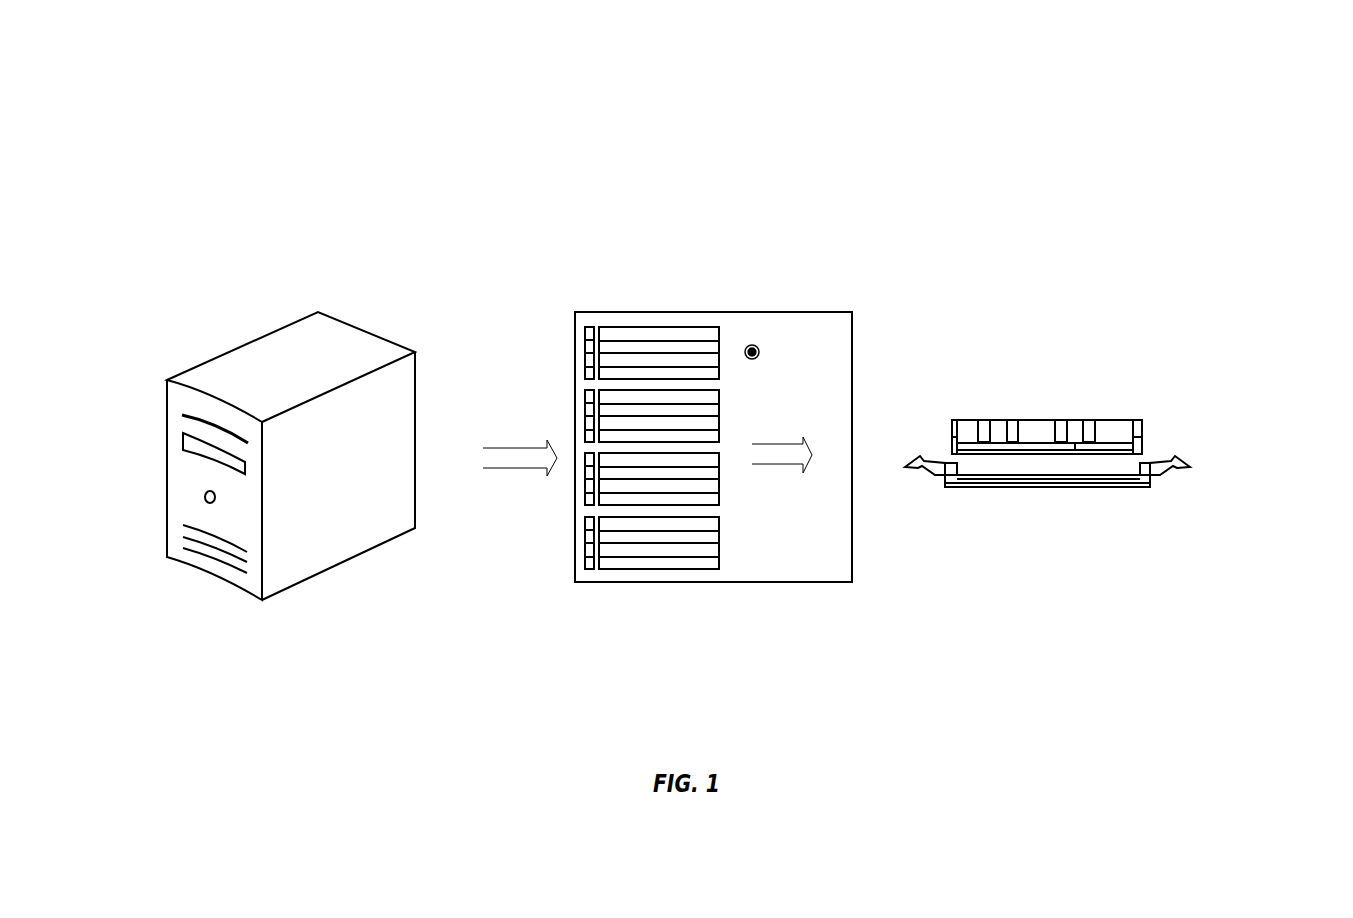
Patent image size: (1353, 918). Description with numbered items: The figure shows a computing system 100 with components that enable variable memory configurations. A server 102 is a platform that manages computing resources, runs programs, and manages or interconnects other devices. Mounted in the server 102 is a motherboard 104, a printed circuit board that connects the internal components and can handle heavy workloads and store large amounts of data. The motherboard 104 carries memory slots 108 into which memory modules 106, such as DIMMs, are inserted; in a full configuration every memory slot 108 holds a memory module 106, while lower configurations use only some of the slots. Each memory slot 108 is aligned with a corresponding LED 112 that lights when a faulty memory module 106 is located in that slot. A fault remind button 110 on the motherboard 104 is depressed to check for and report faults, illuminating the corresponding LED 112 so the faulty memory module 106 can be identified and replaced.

The computing system 100 is at (1084, 126).
The server 102 is at (291, 426).
The motherboard 104 is at (713, 422).
The memory module 106 is at (898, 468).
The memory slot 108 is at (718, 537).
The fault remind button 110 is at (758, 354).
The LED 112 is at (585, 562).